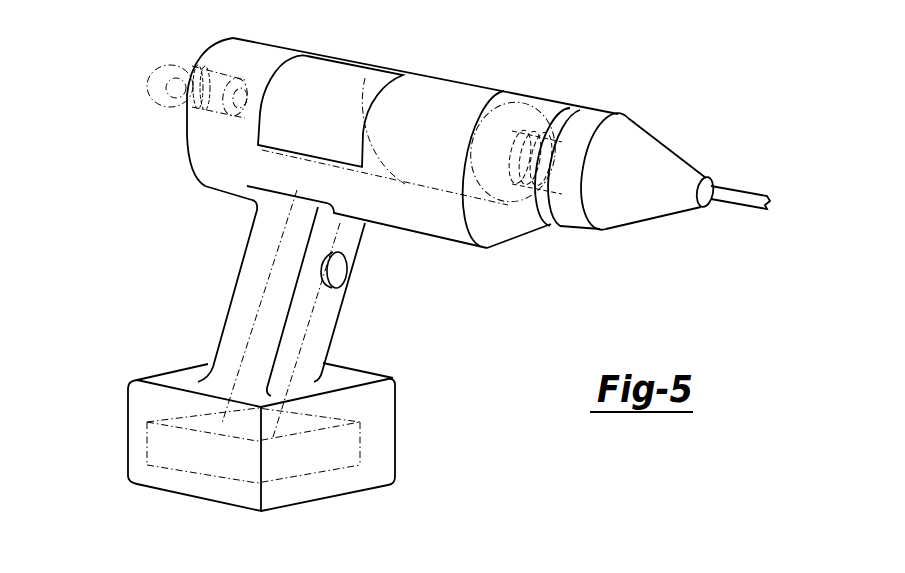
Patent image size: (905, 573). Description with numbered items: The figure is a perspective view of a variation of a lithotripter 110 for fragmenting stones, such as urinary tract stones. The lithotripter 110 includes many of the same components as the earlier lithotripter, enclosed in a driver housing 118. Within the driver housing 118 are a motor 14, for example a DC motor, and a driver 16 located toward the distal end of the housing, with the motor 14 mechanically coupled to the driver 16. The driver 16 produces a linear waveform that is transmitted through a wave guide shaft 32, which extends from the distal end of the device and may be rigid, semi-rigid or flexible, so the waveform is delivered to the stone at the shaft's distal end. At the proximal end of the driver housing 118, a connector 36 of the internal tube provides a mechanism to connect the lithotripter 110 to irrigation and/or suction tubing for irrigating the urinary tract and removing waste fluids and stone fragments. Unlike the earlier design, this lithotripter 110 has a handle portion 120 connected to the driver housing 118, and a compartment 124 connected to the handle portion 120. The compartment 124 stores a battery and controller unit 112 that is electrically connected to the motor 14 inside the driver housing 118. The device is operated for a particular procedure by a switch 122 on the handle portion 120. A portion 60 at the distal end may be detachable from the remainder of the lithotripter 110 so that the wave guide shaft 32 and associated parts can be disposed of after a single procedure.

The lithotripter 110 is at (415, 256).
The driver housing 118 is at (369, 139).
The motor 14 is at (279, 75).
The driver 16 is at (507, 197).
The connector 36 is at (162, 70).
The portion 60 is at (670, 213).
The wave guide shaft 32 is at (740, 194).
The handle 120 is at (227, 303).
The switch 122 is at (340, 271).
The compartment 124 is at (355, 492).
The battery and controller unit 112 is at (172, 448).